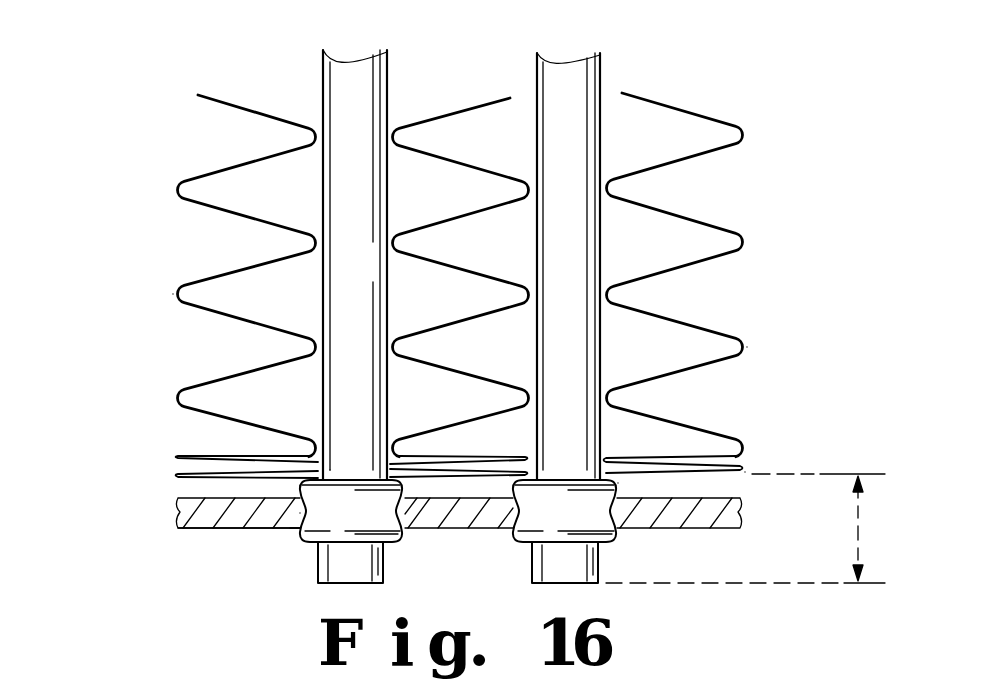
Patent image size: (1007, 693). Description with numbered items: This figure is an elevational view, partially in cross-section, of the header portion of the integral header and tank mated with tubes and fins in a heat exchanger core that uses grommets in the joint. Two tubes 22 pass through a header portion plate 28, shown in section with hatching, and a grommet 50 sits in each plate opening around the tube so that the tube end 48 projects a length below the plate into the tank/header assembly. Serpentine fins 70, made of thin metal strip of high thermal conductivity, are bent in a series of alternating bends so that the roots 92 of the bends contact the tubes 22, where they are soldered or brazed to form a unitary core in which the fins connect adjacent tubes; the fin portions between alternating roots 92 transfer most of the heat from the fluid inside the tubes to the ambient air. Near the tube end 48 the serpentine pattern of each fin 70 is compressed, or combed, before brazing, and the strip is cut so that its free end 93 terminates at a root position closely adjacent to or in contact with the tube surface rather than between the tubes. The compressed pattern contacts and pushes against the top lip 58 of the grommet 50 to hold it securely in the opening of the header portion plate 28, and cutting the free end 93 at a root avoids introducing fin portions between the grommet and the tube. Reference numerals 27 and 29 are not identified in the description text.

The tube 22 is at (337, 87).
The fin 70 is at (254, 113).
The root 92 is at (388, 242).
The free end 93 is at (327, 475).
The plate 27 is at (180, 510).
The header portion plate 28 is at (200, 525).
The plate opening 29 is at (230, 528).
The grommet 50 is at (292, 535).
The tube end 48 is at (362, 584).
The top lip 58 is at (300, 486).